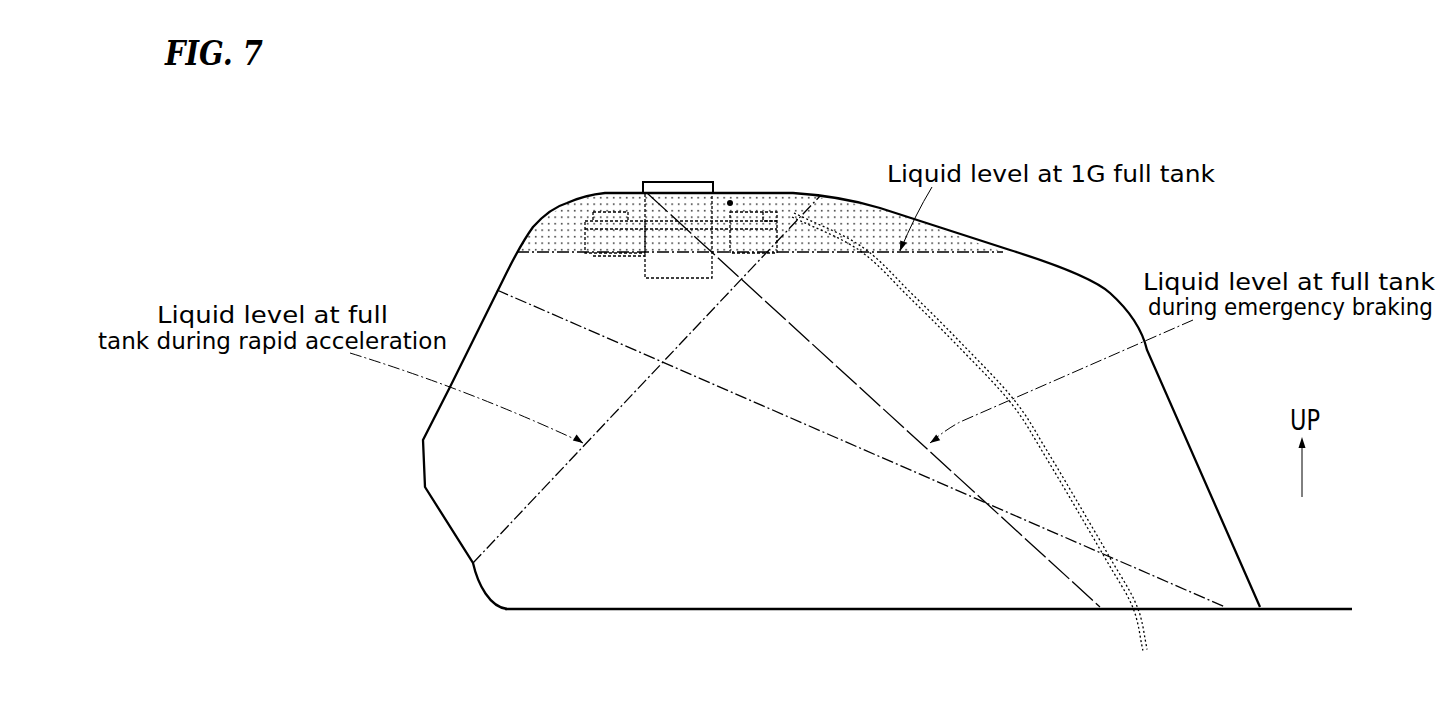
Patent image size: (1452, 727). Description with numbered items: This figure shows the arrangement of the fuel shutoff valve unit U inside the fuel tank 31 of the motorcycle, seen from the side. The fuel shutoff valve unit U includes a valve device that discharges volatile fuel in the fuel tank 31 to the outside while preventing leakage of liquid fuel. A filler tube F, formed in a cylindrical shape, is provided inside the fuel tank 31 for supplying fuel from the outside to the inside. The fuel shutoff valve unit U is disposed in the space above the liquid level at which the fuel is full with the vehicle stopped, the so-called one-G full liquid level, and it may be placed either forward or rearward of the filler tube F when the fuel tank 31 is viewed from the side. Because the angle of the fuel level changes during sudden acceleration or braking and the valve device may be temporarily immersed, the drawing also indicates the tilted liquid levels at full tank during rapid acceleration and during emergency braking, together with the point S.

The fuel tank 31 is at (503, 280).
The fuel shutoff valve unit U is at (587, 218).
The filler tube F is at (642, 212).
The point S (fuel pump suction / sensor position) S is at (730, 200).